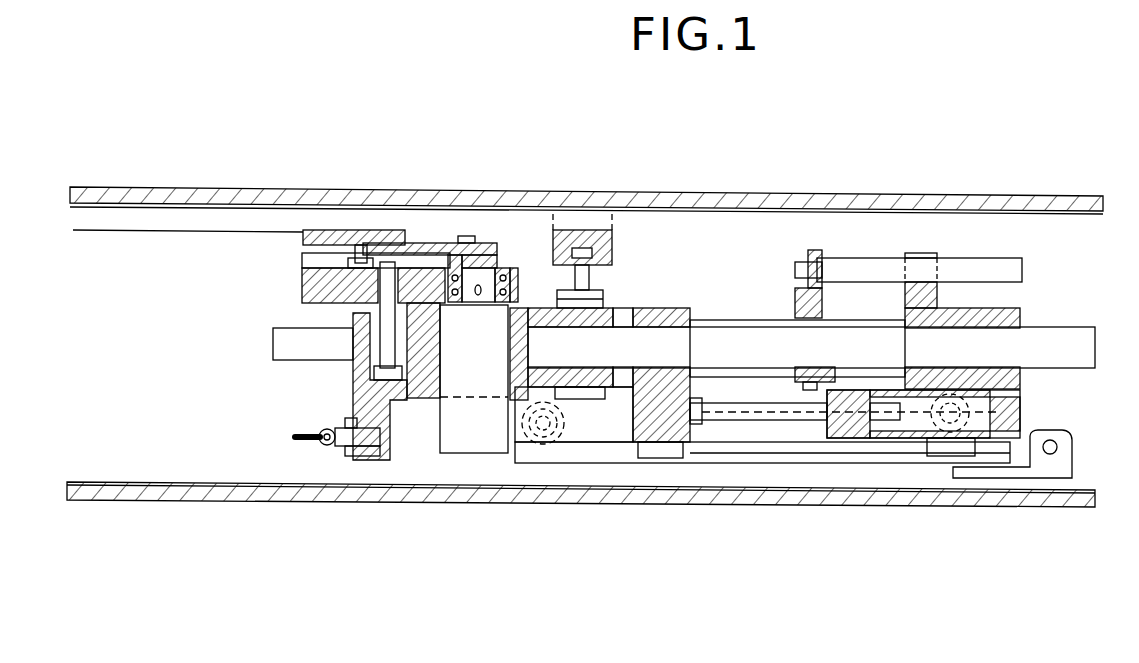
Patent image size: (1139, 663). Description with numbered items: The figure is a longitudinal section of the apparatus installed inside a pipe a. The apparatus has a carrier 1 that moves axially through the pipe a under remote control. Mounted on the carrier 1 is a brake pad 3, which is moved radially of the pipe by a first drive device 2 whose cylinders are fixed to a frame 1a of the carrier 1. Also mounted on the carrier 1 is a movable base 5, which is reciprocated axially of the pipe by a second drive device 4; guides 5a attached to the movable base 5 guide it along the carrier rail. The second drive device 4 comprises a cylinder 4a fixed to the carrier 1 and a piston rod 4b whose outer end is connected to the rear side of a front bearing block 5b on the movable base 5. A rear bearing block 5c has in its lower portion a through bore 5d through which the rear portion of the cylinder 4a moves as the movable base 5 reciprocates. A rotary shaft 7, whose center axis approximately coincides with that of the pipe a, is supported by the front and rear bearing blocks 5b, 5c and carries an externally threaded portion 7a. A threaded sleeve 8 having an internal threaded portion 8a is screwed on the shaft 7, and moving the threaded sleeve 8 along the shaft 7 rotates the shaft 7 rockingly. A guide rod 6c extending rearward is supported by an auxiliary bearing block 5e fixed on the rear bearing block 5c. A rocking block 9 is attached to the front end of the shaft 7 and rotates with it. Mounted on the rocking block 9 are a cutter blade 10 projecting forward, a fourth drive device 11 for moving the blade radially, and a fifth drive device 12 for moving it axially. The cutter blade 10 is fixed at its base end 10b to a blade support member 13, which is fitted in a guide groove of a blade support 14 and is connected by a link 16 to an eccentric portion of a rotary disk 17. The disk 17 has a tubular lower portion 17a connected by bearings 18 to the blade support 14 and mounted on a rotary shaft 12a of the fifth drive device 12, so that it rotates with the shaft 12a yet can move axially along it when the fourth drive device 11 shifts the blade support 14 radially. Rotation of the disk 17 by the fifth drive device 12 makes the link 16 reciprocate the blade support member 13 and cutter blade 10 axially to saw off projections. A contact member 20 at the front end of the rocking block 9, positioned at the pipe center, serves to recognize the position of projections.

The cutter blade 10 is at (166, 231).
The pipe a is at (230, 188).
The base end 10b is at (327, 236).
The blade support member 13 is at (387, 243).
The blade support 14 is at (302, 278).
The link 16 is at (437, 255).
The rotary shaft 12a is at (500, 260).
The rotary disk 17 is at (505, 266).
The tubular lower portion 17a is at (515, 267).
The brake pad 3 is at (585, 231).
The first drive device 2 is at (600, 298).
The bearings 18 is at (515, 298).
The carrier 1 is at (526, 463).
The frame 1a is at (595, 435).
The front bearing block 5b is at (673, 440).
The guides 5a is at (649, 452).
The rotary shaft 7 is at (707, 333).
The externally threaded portion 7a is at (746, 318).
The threaded sleeve 8 is at (833, 320).
The threaded portion 8a is at (857, 320).
The guide rod 6c is at (1003, 257).
The auxiliary bearing block 5e is at (931, 254).
The rear bearing block 5c is at (1025, 320).
The movable base 5 is at (887, 443).
The cylinder 4a is at (852, 443).
The piston rod 4b is at (765, 415).
The second drive device 4 is at (800, 590).
The through bore 5d is at (1020, 408).
The contact member 20 is at (273, 347).
The fourth drive device 11 is at (353, 378).
The rocking block 9 is at (423, 385).
The fifth drive device 12 is at (468, 435).